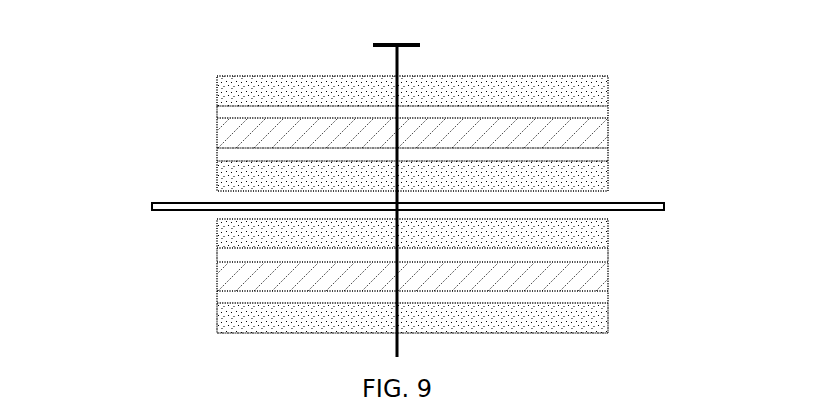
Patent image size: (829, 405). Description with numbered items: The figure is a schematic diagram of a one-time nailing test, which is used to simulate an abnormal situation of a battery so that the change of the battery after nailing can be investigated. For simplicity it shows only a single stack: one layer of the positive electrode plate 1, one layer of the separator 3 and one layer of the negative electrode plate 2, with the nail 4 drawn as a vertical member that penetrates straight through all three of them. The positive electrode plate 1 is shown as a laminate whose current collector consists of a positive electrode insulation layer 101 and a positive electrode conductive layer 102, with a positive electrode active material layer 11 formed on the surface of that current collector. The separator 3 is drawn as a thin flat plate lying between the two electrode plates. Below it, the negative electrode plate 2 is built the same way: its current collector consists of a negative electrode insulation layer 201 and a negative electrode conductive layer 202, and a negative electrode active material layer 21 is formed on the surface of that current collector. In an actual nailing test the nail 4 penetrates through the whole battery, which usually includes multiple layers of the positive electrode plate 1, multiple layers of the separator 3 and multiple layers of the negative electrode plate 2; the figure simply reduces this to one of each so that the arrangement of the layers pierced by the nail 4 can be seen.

The positive electrode plate 1 is at (404, 111).
The positive electrode active material layer 11 is at (580, 93).
The positive electrode insulation layer 101 is at (233, 138).
The positive electrode conductive layer 102 is at (587, 113).
The negative electrode plate 2 is at (407, 276).
The negative electrode active material layer 21 is at (590, 230).
The negative electrode insulation layer 201 is at (240, 278).
The negative electrode conductive layer 202 is at (587, 255).
The separator 3 is at (200, 201).
The nail 4 is at (397, 65).